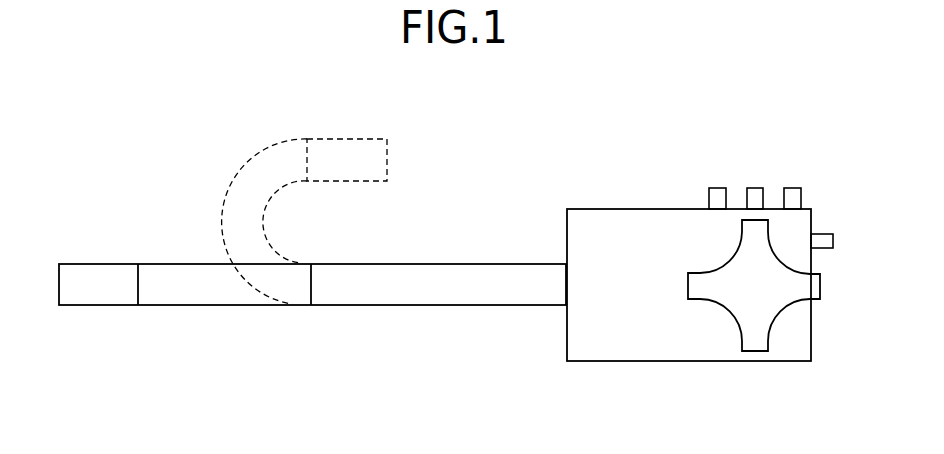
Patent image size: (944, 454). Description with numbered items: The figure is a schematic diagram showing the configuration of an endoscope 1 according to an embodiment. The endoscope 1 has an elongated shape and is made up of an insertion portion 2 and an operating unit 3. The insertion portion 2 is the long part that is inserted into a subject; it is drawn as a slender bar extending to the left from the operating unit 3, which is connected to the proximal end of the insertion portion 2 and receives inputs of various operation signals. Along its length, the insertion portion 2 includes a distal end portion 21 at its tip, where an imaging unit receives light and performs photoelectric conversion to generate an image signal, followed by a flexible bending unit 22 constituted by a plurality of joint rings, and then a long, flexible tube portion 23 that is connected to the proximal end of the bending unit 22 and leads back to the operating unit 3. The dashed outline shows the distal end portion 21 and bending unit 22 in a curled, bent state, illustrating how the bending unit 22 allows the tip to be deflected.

The endoscope 1 is at (536, 150).
The insertion portion 2 is at (448, 260).
The operating unit 3 is at (684, 200).
The distal end portion 21 is at (100, 297).
The bending unit 22 is at (227, 297).
The flexible tube portion 23 is at (445, 297).